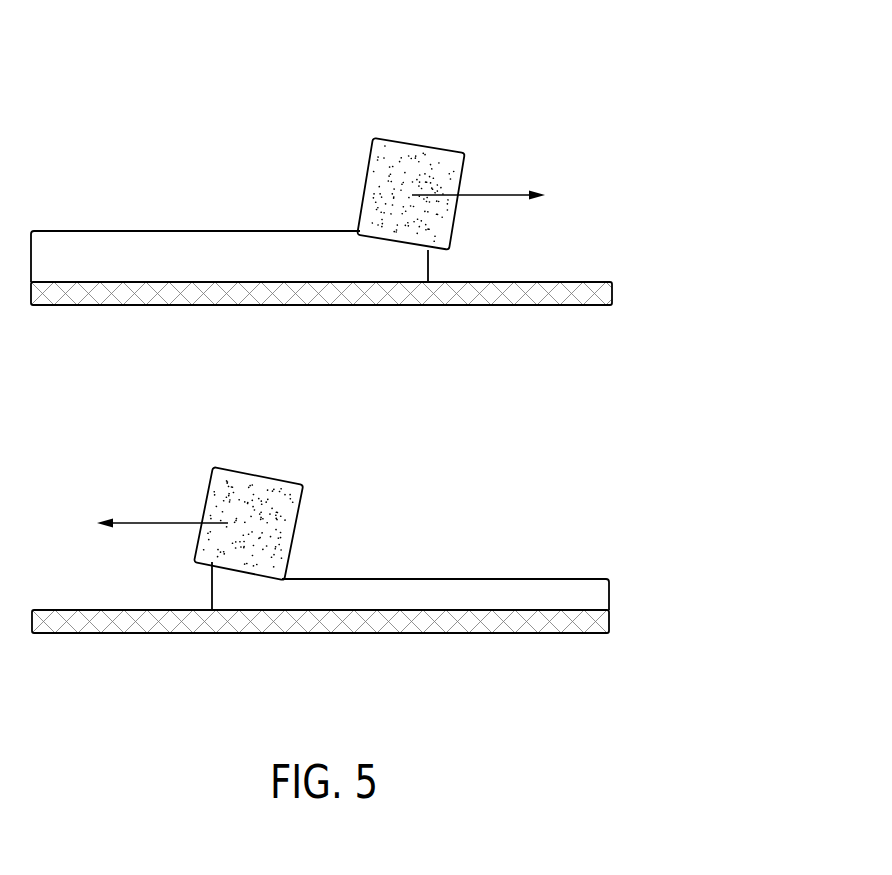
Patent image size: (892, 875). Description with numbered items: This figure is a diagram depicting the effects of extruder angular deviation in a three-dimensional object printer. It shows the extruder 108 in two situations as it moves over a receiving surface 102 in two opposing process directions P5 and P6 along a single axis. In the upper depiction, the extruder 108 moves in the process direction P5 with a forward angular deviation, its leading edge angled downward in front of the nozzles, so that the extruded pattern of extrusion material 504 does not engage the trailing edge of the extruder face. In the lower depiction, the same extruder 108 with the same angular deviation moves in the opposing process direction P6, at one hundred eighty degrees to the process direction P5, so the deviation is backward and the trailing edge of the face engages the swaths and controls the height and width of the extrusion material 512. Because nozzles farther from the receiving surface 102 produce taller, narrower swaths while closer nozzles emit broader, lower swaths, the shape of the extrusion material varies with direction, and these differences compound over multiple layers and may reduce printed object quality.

The substrate 102 is at (327, 292).
The extruder 108 is at (355, 118).
The extrusion material 504 is at (203, 237).
The extrusion material 512 is at (445, 587).
The process direction P5 is at (488, 192).
The process direction P6 is at (150, 518).